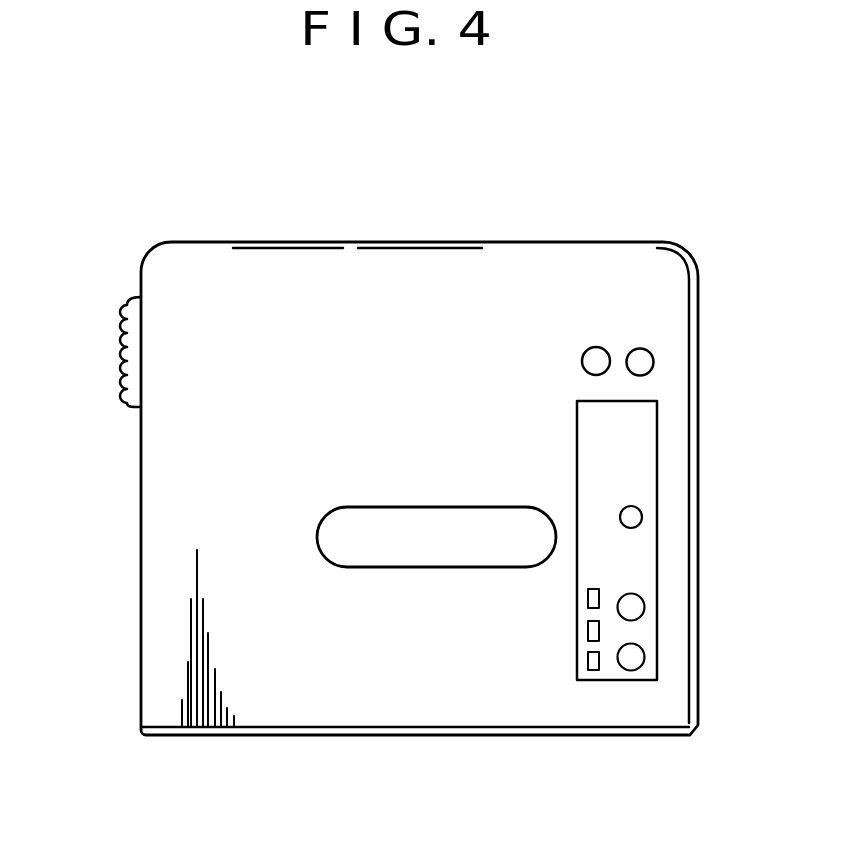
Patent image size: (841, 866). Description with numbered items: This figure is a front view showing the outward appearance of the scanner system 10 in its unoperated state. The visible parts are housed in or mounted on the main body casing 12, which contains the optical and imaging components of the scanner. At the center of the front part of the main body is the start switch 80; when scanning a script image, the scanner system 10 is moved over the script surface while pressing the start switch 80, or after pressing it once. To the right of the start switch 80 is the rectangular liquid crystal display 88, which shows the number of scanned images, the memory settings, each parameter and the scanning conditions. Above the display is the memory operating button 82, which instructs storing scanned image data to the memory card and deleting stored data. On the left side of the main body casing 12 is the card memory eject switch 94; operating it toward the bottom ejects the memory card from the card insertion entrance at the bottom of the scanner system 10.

The scanner system 10 is at (473, 231).
The main body casing 12 is at (192, 245).
The start switch 80 is at (422, 526).
The memory operating button 82 is at (640, 353).
The liquid crystal display 88 is at (650, 670).
The card memory eject switch 94 is at (89, 352).